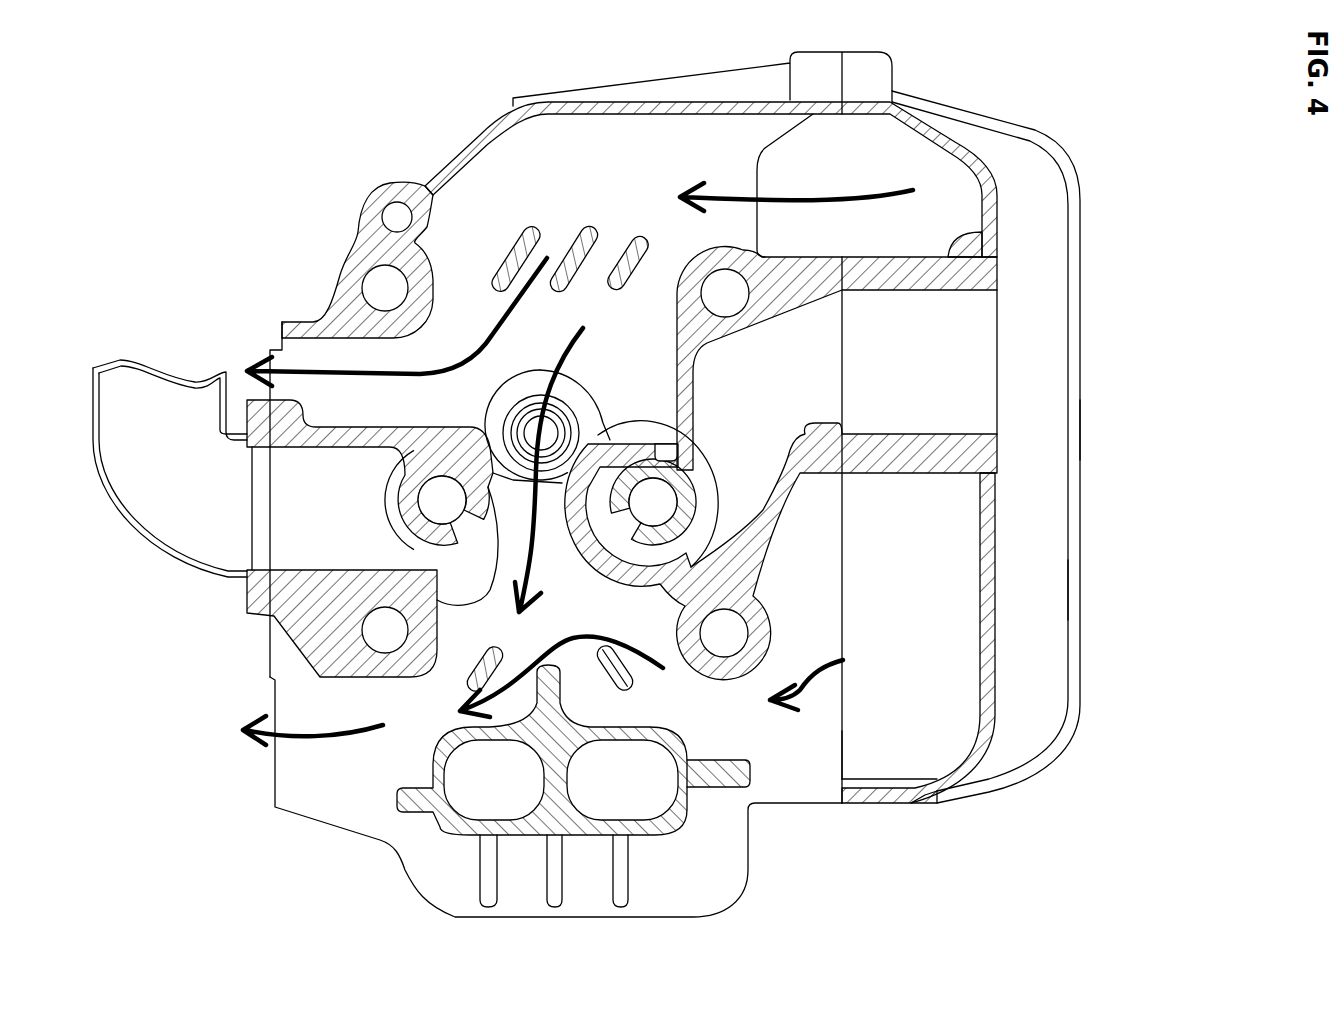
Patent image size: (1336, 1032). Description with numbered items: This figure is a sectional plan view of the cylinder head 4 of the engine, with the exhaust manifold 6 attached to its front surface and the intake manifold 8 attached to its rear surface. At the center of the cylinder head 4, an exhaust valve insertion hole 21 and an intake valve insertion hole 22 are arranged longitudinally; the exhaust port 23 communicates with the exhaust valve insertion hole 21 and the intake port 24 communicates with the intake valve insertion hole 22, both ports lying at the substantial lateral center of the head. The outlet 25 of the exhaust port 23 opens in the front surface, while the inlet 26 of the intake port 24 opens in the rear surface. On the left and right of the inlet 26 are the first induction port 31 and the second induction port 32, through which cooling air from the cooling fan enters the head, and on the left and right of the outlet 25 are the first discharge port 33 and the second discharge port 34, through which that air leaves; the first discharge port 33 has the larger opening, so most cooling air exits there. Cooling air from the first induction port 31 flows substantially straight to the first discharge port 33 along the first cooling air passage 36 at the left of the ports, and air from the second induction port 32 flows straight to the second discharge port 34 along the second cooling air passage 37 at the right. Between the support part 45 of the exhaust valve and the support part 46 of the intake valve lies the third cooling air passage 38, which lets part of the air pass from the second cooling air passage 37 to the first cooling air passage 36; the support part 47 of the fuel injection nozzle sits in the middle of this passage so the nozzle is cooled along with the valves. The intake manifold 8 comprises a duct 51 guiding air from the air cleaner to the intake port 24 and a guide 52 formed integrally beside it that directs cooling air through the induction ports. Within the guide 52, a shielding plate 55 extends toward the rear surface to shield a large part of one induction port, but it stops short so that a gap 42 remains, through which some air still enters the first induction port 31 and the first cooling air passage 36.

The cylinder head 4 is at (497, 112).
The exhaust manifold 6 is at (157, 550).
The intake manifold 8 is at (1096, 158).
The exhaust valve insertion hole 21 is at (392, 473).
The intake valve insertion hole 22 is at (710, 495).
The exhaust port 23 is at (346, 533).
The intake port 24 is at (761, 413).
The outlet 25 is at (262, 501).
The inlet 26 is at (849, 366).
The first induction port 31 is at (832, 752).
The second induction port 32 is at (788, 176).
The first discharge port 33 is at (268, 780).
The second discharge port 34 is at (271, 331).
The first cooling air passage 36 is at (699, 721).
The second cooling air passage 37 is at (489, 196).
The third cooling air passage 38 is at (560, 400).
The gap 42 is at (850, 559).
The support part of an exhaust valve 45 is at (480, 433).
The support part of an intake valve 46 is at (654, 455).
The support part of a fuel injection nozzle 47 is at (543, 368).
The duct 51 is at (982, 240).
The guide 52 is at (1081, 428).
The shielding plate 55 is at (959, 615).